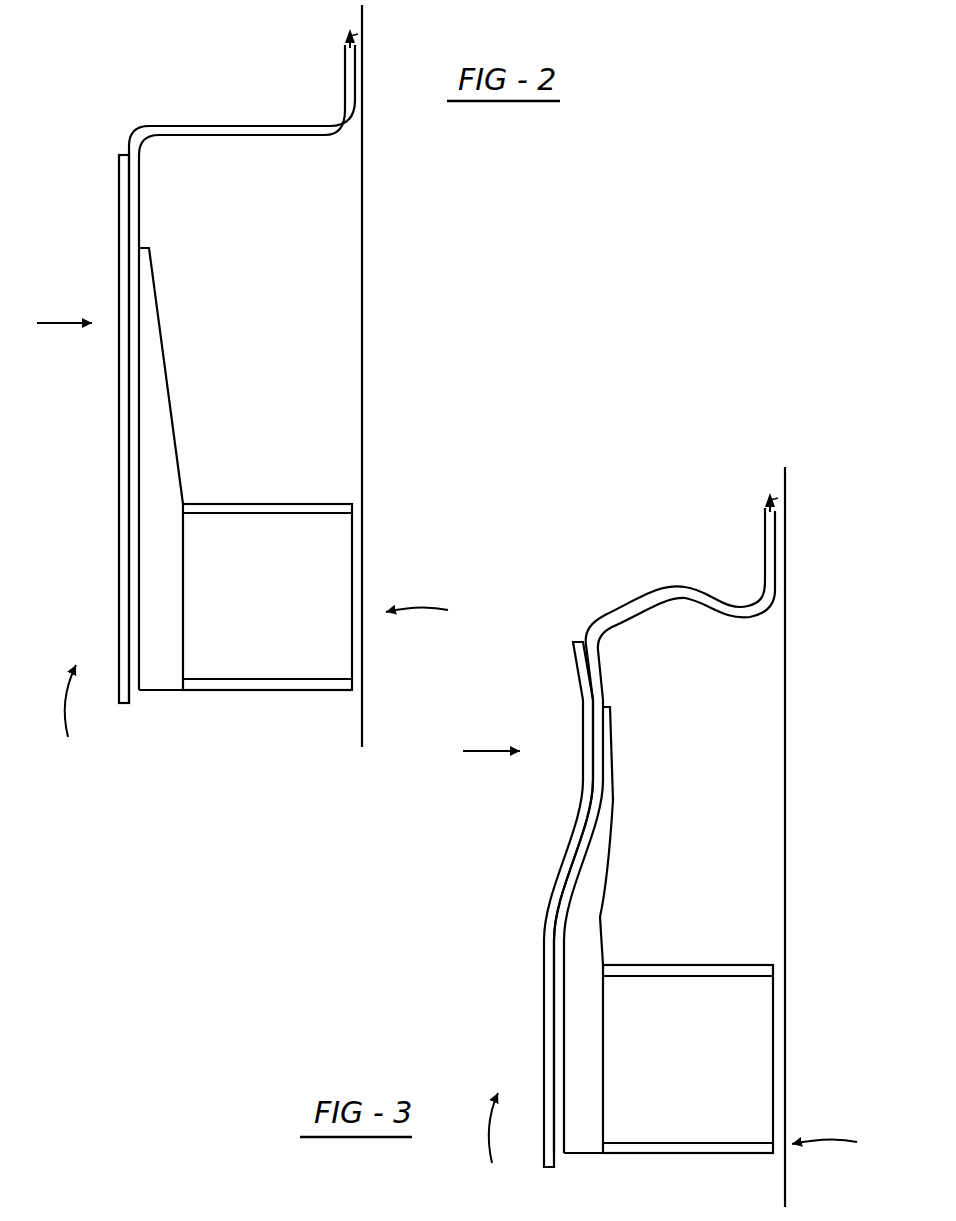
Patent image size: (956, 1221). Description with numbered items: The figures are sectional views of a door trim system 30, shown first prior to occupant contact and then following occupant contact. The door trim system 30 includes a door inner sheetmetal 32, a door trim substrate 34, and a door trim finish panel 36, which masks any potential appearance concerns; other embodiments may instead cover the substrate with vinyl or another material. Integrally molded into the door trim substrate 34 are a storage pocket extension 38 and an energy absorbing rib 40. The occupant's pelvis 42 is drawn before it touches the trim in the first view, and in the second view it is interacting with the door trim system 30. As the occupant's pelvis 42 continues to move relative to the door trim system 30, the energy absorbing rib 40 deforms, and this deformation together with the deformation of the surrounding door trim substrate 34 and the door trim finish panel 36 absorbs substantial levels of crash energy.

In FIG. 2, the door trim system 30 is at (67, 720).
In FIG. 3, the door trim system 30 is at (490, 1147).
In FIG. 2, the door inner sheetmetal 32 is at (362, 287).
In FIG. 3, the door inner sheetmetal 32 is at (786, 719).
In FIG. 2, the door trim substrate 34 is at (190, 126).
In FIG. 3, the door trim substrate 34 is at (636, 596).
In FIG. 2, the door trim finish panel 36 is at (123, 191).
In FIG. 3, the door trim finish panel 36 is at (585, 691).
In FIG. 2, the storage pocket extension 38 is at (432, 615).
In FIG. 3, the storage pocket extension 38 is at (839, 1145).
In FIG. 2, the energy absorbing rib 40 is at (164, 586).
In FIG. 3, the energy absorbing rib 40 is at (583, 1046).
In FIG. 2, the occupant's pelvis 42 is at (74, 237).
In FIG. 3, the occupant's pelvis 42 is at (507, 809).